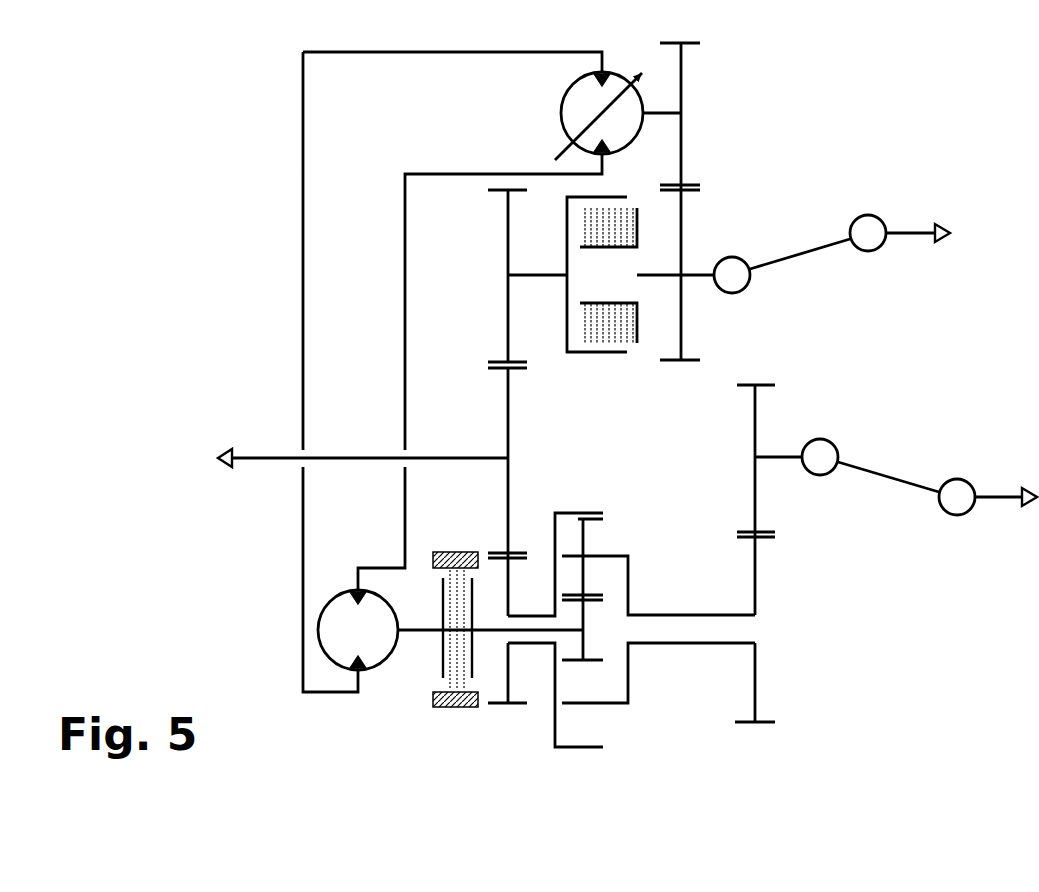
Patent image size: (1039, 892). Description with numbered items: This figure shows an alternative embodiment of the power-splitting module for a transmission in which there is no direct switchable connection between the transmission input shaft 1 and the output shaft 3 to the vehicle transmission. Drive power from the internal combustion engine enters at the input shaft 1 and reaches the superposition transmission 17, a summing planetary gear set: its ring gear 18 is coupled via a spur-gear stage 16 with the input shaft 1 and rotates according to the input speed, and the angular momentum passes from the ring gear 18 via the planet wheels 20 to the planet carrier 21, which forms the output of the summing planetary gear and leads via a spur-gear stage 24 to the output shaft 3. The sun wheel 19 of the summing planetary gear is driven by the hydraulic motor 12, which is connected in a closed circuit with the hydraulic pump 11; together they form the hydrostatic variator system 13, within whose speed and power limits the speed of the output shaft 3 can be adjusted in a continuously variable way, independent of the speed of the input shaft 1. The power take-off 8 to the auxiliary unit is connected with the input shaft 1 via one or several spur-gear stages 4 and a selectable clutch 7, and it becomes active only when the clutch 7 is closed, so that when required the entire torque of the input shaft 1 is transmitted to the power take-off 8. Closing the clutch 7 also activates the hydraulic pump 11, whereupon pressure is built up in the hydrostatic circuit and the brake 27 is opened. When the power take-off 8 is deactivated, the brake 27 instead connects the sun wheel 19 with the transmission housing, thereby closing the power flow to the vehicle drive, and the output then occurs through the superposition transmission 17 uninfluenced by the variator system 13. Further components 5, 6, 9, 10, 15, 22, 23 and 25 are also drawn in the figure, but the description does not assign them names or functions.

The input shaft 1 is at (288, 458).
The output shaft 3 is at (785, 453).
The spur-gear stage 4 is at (481, 365).
The shaft 5 is at (507, 392).
The shaft 6 is at (507, 288).
The clutch 7 is at (595, 328).
The power take-off 8 is at (908, 224).
The shaft 9 is at (683, 260).
The motor shaft 10 is at (683, 114).
The hydraulic pump 11 is at (560, 117).
The hydraulic motor 12 is at (323, 652).
The variator system 13 is at (284, 302).
The shaft 15 is at (498, 708).
The spur-gear stage 16 is at (479, 545).
The superposition transmission 17 is at (582, 752).
The ring gear 18 is at (552, 723).
The sun wheel 19 is at (588, 662).
The planet wheels 20 is at (583, 533).
The planet carrier 21 is at (658, 585).
The shaft 22 is at (757, 668).
The clutch 23 is at (757, 513).
The spur-gear stage 24 is at (755, 728).
The output drive 25 is at (903, 459).
The brake 27 is at (443, 683).